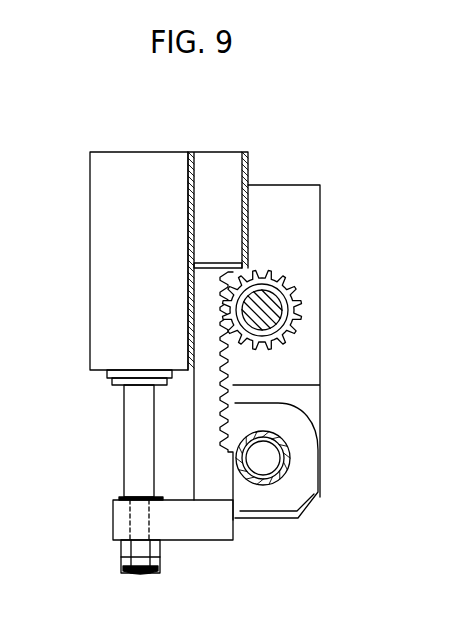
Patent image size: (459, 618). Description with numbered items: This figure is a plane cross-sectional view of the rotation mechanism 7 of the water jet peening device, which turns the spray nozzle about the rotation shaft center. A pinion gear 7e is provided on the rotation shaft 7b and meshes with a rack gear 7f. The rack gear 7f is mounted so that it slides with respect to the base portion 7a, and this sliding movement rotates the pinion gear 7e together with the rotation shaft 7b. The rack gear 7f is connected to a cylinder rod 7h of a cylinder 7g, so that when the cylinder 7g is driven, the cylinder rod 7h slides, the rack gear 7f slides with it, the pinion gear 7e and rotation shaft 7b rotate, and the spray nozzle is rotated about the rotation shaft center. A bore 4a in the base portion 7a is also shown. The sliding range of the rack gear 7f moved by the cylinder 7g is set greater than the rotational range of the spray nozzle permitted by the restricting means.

The rotation mechanism 7 is at (356, 207).
The base portion 7a is at (308, 244).
The rotation shaft 7b is at (283, 310).
The pinion gear 7e is at (283, 292).
The rack gear 7f is at (212, 362).
The cylinder 7g is at (105, 258).
The cylinder rod 7h is at (137, 437).
The bearing hole 4a is at (290, 458).